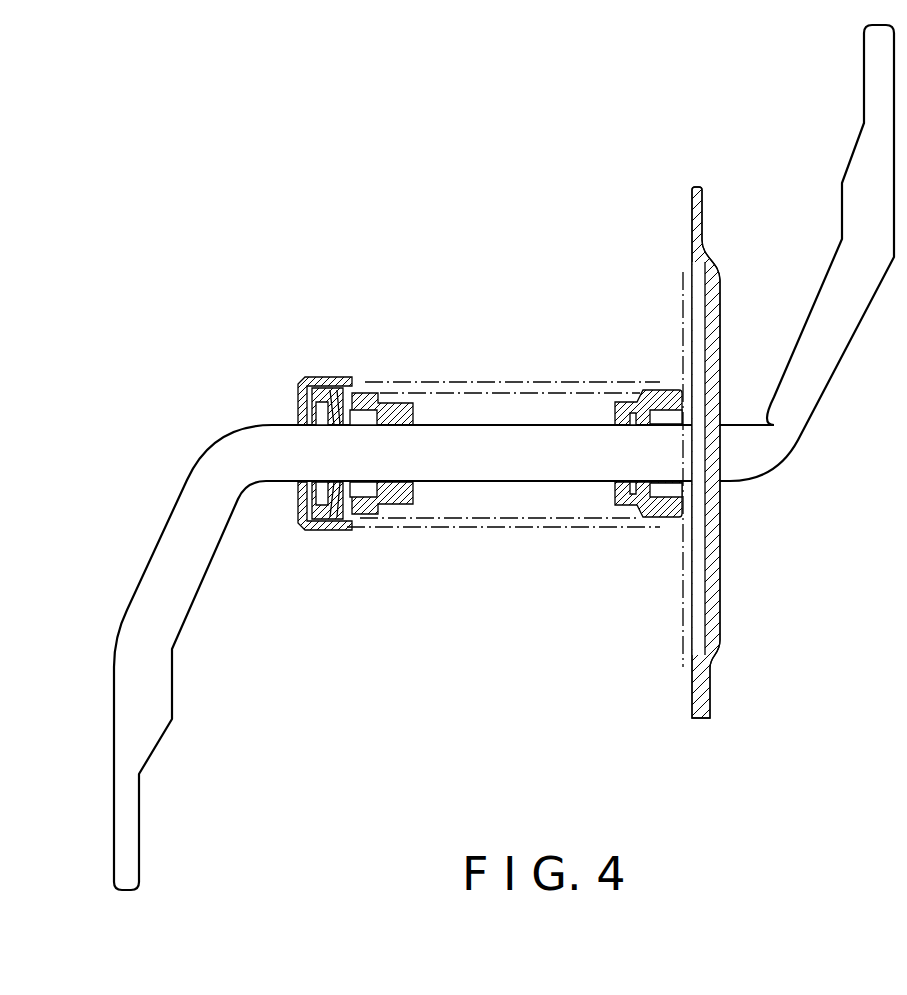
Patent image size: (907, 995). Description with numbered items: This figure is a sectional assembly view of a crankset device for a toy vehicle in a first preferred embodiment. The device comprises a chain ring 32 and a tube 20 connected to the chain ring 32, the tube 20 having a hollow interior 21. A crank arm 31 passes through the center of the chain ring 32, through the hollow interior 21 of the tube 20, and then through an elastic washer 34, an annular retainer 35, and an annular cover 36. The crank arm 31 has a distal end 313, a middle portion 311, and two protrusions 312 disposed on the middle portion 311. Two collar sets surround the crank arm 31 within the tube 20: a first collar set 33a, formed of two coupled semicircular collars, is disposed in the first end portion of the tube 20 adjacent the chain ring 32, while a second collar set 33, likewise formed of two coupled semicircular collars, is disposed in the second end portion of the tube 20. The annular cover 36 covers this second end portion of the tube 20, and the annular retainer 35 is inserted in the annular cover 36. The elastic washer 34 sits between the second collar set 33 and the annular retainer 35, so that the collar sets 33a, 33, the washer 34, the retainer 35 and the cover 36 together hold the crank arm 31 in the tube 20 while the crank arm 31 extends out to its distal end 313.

The tube 20 is at (532, 382).
The hollow interior 21 is at (500, 392).
The crank arm 31 is at (515, 483).
The middle portion 311 is at (558, 463).
The protrusions 312 is at (302, 533).
The distal end 313 is at (131, 832).
The chain ring 32 is at (693, 190).
The second collar set 33 is at (365, 397).
The first collar set 33a is at (650, 393).
The elastic washer 34 is at (330, 390).
The annular retainer 35 is at (330, 534).
The annular cover 36 is at (300, 390).